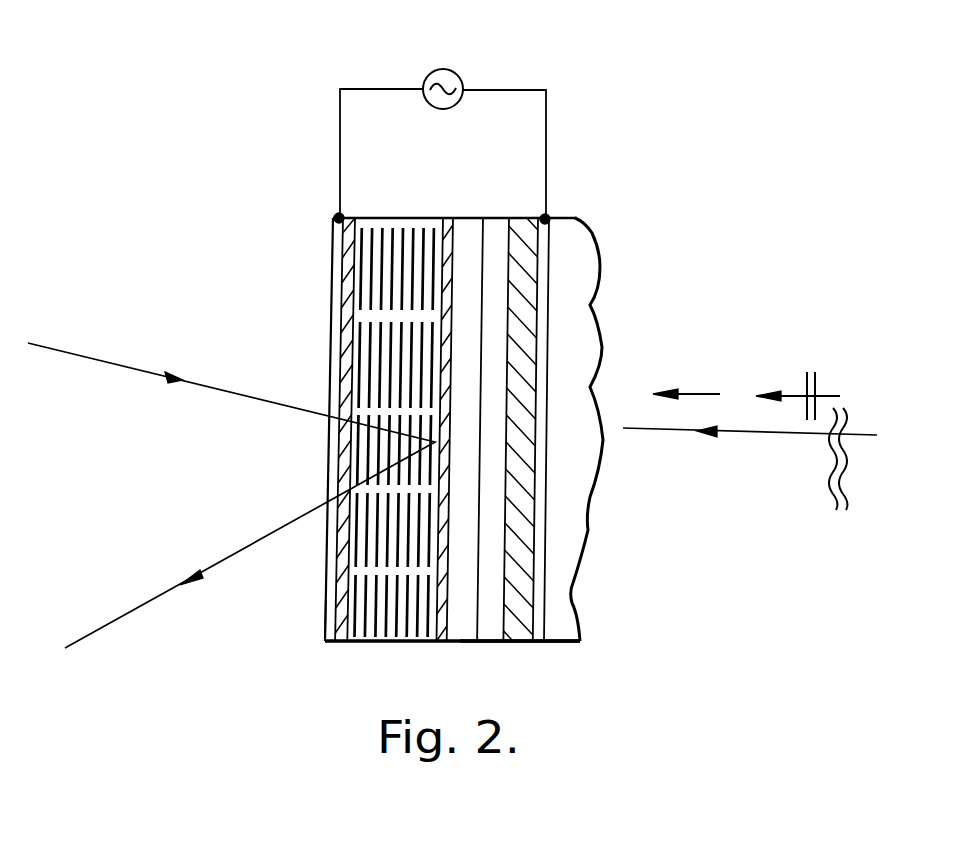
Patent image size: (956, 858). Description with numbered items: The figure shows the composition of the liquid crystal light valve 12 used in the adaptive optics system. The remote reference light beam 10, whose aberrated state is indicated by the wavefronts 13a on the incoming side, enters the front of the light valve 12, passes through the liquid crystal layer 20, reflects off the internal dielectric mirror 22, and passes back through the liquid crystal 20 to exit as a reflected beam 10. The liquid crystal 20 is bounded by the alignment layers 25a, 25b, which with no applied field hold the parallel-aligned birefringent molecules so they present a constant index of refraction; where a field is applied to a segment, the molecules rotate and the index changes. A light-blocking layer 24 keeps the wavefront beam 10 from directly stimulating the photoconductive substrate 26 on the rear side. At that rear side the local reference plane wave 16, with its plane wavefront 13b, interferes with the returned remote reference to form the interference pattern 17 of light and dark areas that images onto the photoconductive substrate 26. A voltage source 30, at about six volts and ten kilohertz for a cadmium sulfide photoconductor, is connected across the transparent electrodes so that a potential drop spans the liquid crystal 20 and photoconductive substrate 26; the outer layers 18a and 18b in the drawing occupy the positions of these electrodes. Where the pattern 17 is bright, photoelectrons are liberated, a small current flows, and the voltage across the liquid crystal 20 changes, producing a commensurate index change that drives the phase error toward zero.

The remote reference light beam 10 is at (95, 363).
The liquid crystal light valve 12 is at (597, 171).
The aberrated wavefronts 13a is at (836, 517).
The plane wavefront 13b is at (817, 380).
The local reference plane wave 16 is at (704, 392).
The interference pattern 17 is at (598, 232).
The first transparent substrate layer 18a is at (326, 612).
The second layer 18b is at (544, 594).
The liquid crystal layer 20 is at (392, 232).
The dielectric mirror 22 is at (467, 205).
The light-blocking layer 24 is at (484, 644).
The liquid crystal alignment layer 25a is at (351, 214).
The liquid crystal alignment layer 25b is at (447, 216).
The photoconductive substrate 26 is at (522, 226).
The voltage source 30 is at (463, 74).